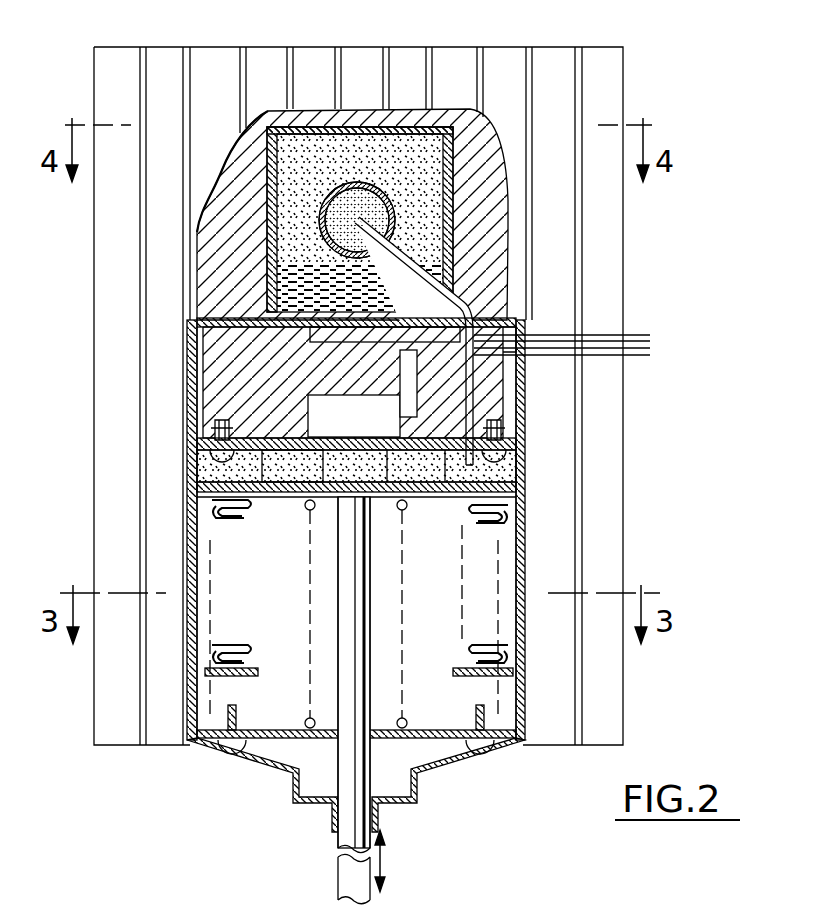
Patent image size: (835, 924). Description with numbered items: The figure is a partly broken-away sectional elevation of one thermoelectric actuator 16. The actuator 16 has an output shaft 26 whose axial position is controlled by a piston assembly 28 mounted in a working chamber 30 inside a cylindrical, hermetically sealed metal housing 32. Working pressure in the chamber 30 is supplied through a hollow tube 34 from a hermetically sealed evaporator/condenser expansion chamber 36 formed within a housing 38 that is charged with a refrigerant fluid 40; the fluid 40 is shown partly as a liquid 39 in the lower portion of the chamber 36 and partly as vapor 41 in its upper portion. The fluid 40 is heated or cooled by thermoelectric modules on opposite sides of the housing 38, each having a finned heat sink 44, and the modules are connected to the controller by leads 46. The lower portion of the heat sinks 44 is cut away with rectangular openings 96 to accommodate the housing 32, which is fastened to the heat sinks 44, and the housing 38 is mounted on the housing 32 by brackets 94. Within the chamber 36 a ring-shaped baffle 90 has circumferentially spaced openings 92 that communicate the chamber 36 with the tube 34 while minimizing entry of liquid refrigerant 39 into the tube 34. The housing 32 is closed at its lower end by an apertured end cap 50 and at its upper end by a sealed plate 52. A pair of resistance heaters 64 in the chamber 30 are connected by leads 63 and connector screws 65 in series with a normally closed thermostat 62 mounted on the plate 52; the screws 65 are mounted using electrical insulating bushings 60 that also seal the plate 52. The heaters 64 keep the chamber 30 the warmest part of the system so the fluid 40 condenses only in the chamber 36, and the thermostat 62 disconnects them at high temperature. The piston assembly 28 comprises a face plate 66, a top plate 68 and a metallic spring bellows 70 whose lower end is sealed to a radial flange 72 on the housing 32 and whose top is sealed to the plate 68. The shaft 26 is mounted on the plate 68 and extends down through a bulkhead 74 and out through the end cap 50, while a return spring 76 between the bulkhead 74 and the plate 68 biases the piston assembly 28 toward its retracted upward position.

The thermoelectric actuator 16 is at (676, 44).
The output shaft 26 is at (332, 835).
The piston assembly 28 is at (514, 541).
The working chamber 30 is at (205, 488).
The metal housing 32 is at (525, 680).
The hollow tube 34 is at (483, 320).
The expansion chamber 36 is at (300, 133).
The housing 38 is at (398, 126).
The liquid refrigerant 39 is at (277, 266).
The refrigerant fluid 40 is at (290, 215).
The vapor 41 is at (272, 175).
The finned heat sink 44 is at (242, 66).
The leads 46 is at (645, 335).
The end cap 50 is at (458, 765).
The sealed plate 52 is at (427, 417).
The electrical insulating bushings 60 is at (196, 442).
The thermostat 62 is at (376, 431).
The leads 63 is at (260, 410).
The resistance heaters 64 is at (277, 470).
The connector screws 65 is at (205, 462).
The face plate 66 is at (200, 510).
The top plate 68 is at (295, 500).
The spring bellows 70 is at (222, 522).
The radial flange 72 is at (247, 677).
The bulkhead 74 is at (268, 768).
The return spring 76 is at (404, 555).
The ring-shaped baffle 90 is at (378, 192).
The openings 92 is at (339, 192).
The brackets 94 is at (197, 321).
The rectangular openings 96 is at (512, 578).